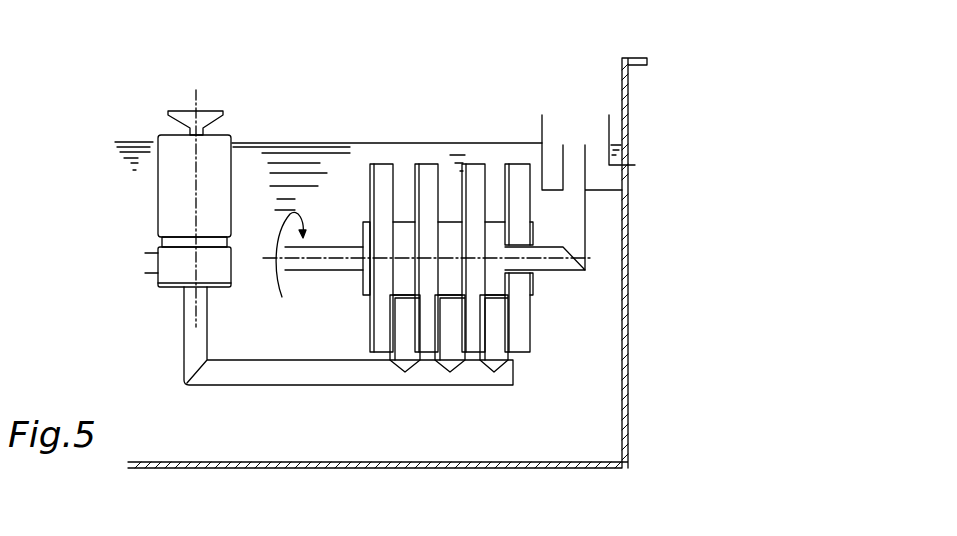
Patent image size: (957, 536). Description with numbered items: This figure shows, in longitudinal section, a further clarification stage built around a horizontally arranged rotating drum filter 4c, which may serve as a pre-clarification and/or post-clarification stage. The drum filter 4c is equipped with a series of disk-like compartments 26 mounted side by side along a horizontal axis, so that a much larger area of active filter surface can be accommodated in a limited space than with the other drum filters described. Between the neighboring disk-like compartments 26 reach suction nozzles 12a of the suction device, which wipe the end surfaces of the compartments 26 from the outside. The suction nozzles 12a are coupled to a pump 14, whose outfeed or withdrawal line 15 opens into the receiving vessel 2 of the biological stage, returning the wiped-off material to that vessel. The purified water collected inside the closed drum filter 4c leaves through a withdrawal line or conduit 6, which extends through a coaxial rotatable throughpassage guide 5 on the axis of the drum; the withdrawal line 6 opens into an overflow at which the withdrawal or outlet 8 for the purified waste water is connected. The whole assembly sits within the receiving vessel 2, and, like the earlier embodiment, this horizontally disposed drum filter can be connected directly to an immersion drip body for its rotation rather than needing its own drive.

The receiving vessel 2 is at (230, 468).
The pump 14 is at (166, 204).
The outfeed or withdrawal line 15 is at (150, 266).
The withdrawal line or conduit 6 is at (572, 264).
The coaxial rotatable throughpassage guide 5 is at (535, 277).
The disk-like compartments 26 is at (424, 348).
The drum filter 4c is at (424, 173).
The suction nozzles 12a is at (492, 358).
The withdrawal or outlet 8 is at (625, 178).